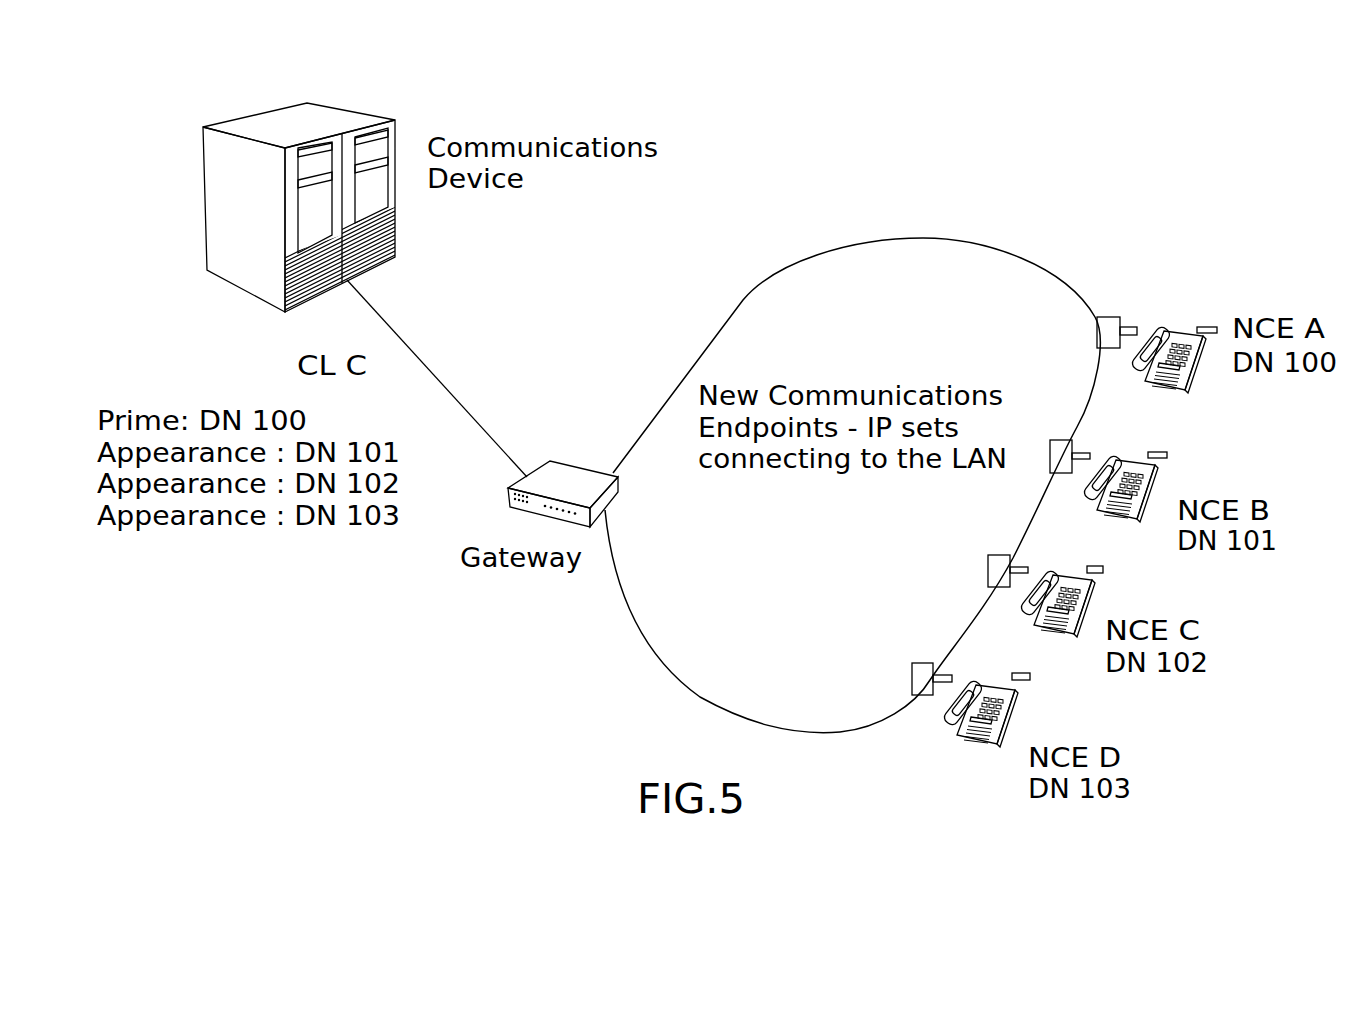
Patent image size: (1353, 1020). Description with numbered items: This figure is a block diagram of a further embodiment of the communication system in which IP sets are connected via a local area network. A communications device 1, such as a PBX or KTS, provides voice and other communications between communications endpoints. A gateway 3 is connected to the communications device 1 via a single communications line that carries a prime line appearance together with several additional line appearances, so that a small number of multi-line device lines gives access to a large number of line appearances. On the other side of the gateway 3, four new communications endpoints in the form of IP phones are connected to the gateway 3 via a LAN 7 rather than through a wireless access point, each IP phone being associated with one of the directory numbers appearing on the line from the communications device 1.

The communications device 1 is at (222, 112).
The gateway 3 is at (577, 465).
The LAN 7 is at (925, 245).